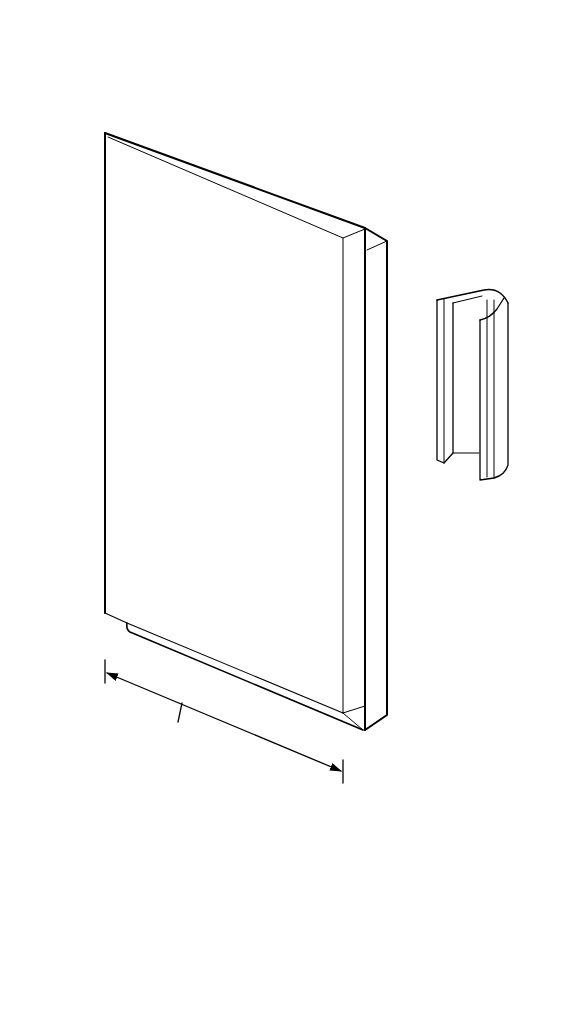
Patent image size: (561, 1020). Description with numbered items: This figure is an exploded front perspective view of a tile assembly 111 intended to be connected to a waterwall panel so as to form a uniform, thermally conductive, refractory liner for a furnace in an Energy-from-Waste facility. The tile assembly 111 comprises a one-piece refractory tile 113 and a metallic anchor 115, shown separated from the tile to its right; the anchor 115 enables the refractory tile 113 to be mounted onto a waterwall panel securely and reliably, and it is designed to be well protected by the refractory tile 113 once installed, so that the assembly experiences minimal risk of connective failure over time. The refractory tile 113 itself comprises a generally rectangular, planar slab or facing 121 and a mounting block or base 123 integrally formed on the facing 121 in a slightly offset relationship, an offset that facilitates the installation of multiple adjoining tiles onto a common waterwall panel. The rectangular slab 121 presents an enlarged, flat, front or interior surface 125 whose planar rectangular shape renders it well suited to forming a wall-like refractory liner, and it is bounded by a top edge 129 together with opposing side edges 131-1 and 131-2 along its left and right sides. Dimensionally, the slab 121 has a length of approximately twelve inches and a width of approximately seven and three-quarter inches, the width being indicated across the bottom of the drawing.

The tile assembly 111 is at (404, 80).
The refractory tile 113 is at (442, 735).
The metallic anchor 115 is at (518, 240).
The rectangular slab 121 is at (143, 372).
The mounting block 123 is at (388, 258).
The front surface 125 is at (143, 570).
The top edge 129 is at (129, 135).
The first side edge 131-1 is at (106, 235).
The second side edge 131-2 is at (354, 600).